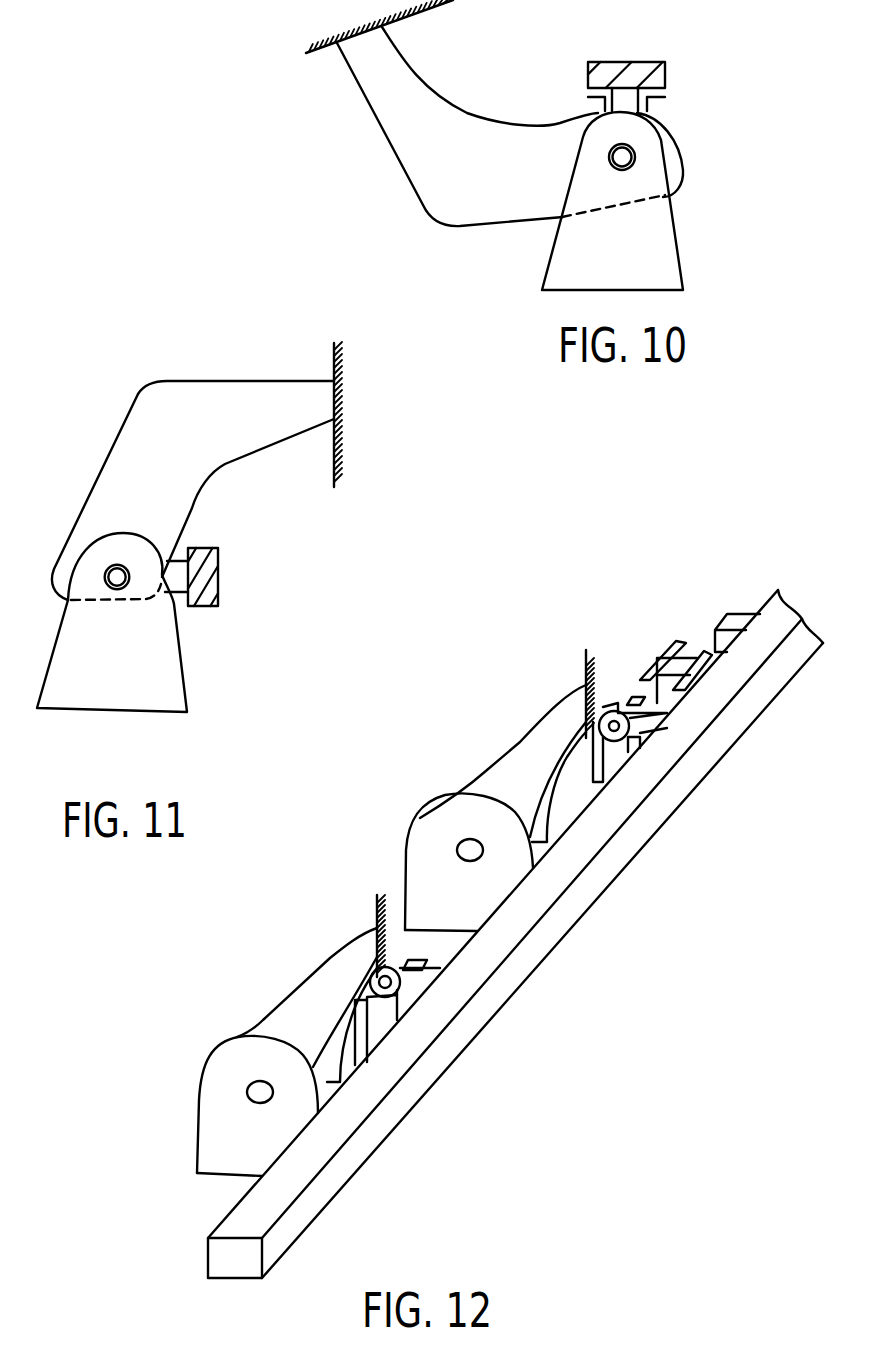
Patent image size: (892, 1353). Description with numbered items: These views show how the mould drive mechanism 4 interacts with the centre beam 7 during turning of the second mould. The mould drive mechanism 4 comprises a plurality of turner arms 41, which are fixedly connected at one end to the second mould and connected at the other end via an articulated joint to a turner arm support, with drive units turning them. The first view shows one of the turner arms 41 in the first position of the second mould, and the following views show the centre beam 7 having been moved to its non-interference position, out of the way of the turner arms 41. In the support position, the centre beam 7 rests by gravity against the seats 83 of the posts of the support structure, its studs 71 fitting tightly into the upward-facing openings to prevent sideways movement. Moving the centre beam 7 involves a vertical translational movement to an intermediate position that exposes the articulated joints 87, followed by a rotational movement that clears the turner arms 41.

In FIG. 10, the mould drive mechanism 4 is at (670, 240).
In FIG. 11, the mould drive mechanism 4 is at (141, 702).
In FIG. 12, the mould drive mechanism 4 is at (418, 837).
In FIG. 10, the centre beam 7 is at (627, 68).
In FIG. 11, the centre beam 7 is at (212, 580).
In FIG. 12, the centre beam 7 is at (325, 1195).
In FIG. 10, the turner arms 41 is at (434, 100).
In FIG. 11, the turner arms 41 is at (130, 443).
In FIG. 12, the turner arms 41 is at (527, 737).
In FIG. 12, the studs 71 is at (737, 622).
In FIG. 12, the seat 83 is at (665, 652).
In FIG. 12, the articulated joints 87 is at (622, 732).